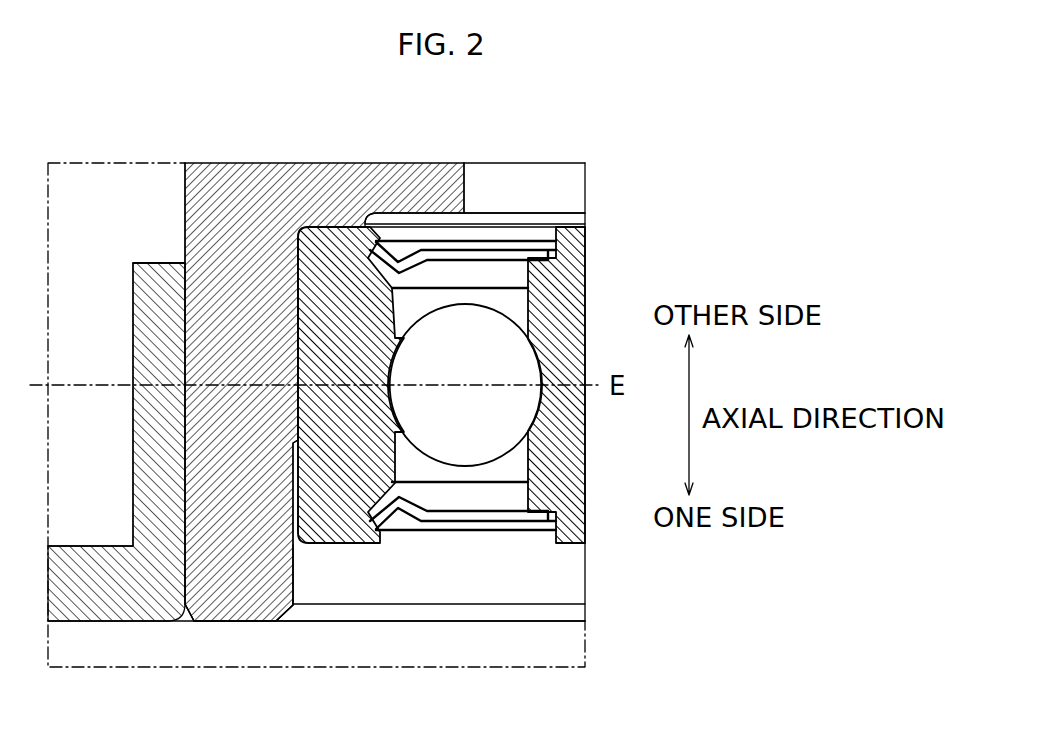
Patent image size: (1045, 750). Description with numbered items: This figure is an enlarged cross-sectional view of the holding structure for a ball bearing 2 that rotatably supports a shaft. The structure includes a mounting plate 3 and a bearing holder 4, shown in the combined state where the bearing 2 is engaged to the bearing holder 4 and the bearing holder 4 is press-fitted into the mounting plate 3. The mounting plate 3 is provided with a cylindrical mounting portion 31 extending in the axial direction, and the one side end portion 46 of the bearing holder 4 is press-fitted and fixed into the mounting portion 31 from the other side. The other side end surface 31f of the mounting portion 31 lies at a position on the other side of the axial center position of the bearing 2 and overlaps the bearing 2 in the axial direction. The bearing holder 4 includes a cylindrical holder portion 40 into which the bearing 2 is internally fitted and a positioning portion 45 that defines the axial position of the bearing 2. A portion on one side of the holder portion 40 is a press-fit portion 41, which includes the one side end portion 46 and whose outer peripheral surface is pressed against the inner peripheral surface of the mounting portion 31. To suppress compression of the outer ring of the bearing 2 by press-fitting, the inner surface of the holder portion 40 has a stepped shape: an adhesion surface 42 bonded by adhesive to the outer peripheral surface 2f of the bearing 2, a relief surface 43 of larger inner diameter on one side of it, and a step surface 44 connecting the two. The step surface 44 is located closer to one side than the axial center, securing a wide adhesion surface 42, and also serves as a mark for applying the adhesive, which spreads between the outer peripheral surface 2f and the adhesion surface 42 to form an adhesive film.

The ball bearing 2 is at (575, 556).
The outer peripheral surface of the bearing 2f is at (298, 262).
The mounting plate 3 is at (104, 522).
The mounting portion 31 is at (126, 452).
The other side end surface 31f is at (160, 266).
The bearing holder 4 is at (490, 641).
The holder portion 40 is at (417, 634).
The press-fit portion 41 is at (209, 555).
The adhesion surface 42 is at (303, 296).
The relief surface 43 is at (293, 574).
The step surface 44 is at (299, 540).
The positioning portion 45 is at (462, 190).
The one side end portion 46 is at (238, 592).